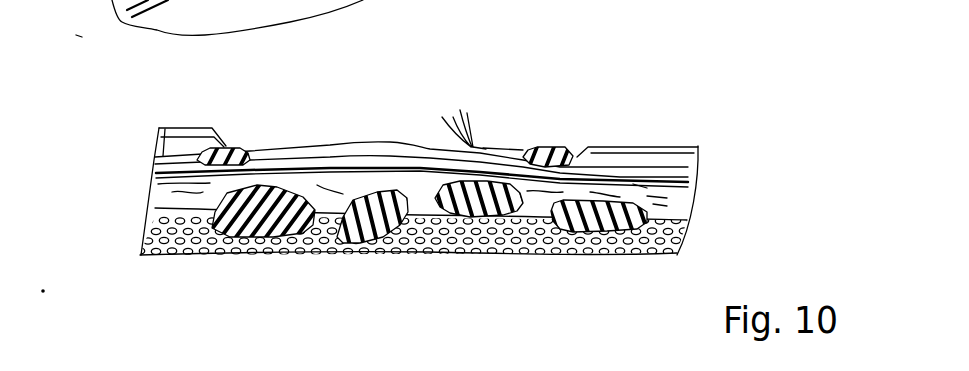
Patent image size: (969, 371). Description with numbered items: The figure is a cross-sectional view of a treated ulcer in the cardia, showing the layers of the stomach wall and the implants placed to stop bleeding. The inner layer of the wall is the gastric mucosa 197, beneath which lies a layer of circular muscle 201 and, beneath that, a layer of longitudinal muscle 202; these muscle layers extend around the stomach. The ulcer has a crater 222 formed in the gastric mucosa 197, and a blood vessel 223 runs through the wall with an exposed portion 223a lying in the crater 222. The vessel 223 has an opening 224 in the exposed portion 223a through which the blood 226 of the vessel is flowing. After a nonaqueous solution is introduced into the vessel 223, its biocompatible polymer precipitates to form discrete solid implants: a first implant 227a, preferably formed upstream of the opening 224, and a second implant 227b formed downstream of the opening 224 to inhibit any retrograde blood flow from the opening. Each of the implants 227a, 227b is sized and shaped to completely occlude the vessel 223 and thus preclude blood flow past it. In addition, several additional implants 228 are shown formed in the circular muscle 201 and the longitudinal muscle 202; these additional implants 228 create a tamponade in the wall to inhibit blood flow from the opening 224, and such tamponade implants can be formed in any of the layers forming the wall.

The gastric mucosa 197 is at (178, 128).
The layer of circular muscle 201 is at (178, 193).
The layer of longitudinal muscle 202 is at (633, 252).
The crater 222 is at (240, 137).
The blood vessel 223 is at (162, 131).
The exposed portion 223a is at (383, 142).
The opening 224 is at (478, 148).
The blood 226 is at (470, 147).
The first implant 227a is at (562, 148).
The second implant 227b is at (225, 148).
The additional implants 228 is at (564, 227).